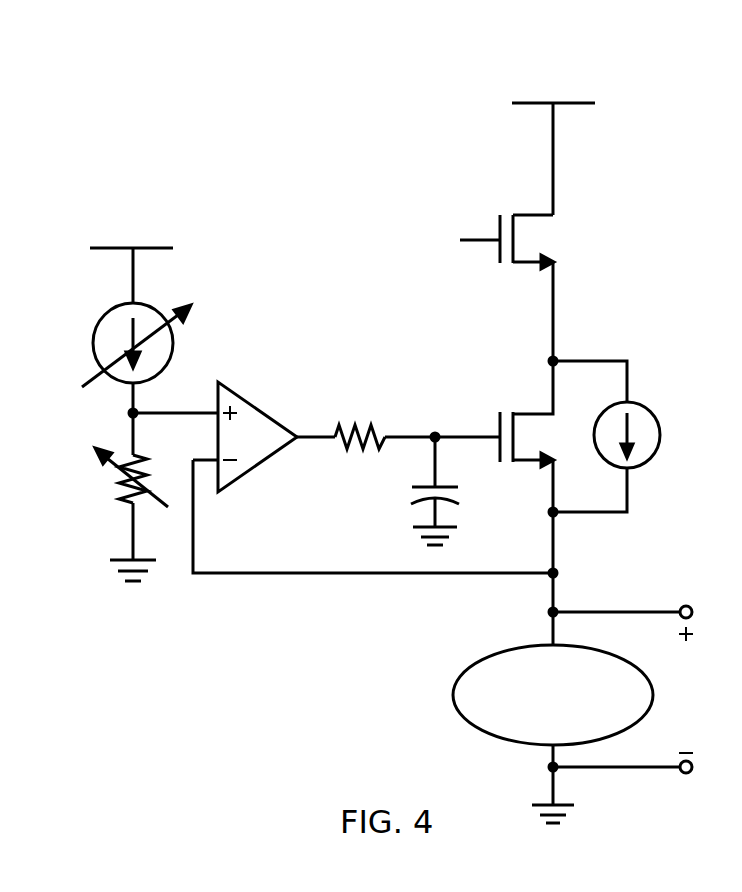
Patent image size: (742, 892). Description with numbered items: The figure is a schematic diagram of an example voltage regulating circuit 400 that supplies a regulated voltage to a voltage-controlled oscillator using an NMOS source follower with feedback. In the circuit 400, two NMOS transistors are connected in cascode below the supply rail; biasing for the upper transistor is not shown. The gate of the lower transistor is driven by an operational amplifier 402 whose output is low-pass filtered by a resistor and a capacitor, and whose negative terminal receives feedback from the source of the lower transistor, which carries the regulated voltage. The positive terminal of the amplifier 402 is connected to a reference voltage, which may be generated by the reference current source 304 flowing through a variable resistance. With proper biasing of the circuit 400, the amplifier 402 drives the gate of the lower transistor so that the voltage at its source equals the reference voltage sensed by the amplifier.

The voltage regulating circuit 400 is at (381, 438).
The reference current source 304 is at (108, 309).
The operational amplifier 402 is at (238, 394).